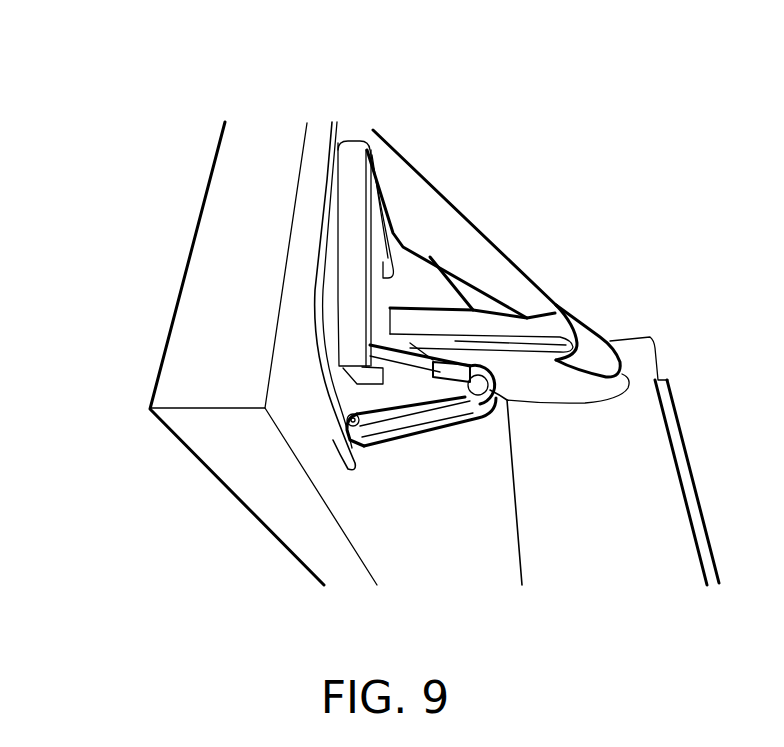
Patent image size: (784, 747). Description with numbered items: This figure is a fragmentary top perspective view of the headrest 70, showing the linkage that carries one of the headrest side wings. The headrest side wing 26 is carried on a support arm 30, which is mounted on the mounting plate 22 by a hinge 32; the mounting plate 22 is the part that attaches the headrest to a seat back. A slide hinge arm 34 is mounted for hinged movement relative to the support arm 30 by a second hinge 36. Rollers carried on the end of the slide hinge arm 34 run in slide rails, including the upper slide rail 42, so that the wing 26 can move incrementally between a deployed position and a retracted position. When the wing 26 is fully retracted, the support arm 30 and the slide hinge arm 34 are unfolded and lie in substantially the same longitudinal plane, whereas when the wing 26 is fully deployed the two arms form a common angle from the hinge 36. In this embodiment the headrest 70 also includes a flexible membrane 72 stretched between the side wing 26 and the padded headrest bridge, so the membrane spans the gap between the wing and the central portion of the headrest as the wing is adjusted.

The headrest 70 is at (70, 146).
The mounting plate 22 is at (327, 347).
The upper slide rail 42 is at (352, 232).
The slide hinge arm 34 is at (388, 352).
The flexible membrane 72 is at (473, 255).
The headrest side wing 26 is at (550, 323).
The hinge 36 is at (490, 386).
The support arm 30 is at (417, 428).
The hinge 32 is at (347, 423).